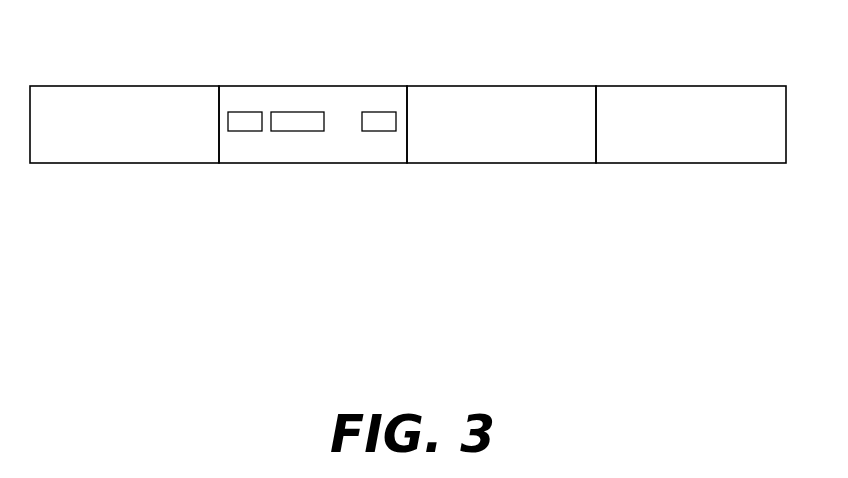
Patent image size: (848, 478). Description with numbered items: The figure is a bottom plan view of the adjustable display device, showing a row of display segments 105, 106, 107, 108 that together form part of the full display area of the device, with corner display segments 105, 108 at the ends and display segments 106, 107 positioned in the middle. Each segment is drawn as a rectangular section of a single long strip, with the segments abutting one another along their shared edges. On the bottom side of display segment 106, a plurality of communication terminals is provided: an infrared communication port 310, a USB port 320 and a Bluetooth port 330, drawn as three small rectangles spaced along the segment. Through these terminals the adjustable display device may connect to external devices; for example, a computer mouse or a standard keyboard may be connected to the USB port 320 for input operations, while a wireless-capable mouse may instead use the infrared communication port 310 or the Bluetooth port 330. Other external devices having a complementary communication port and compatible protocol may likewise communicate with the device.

The display segment 105 is at (108, 86).
The display segment 106 is at (290, 86).
The display segment 107 is at (477, 86).
The display segment 108 is at (643, 86).
The infrared communication port 310 is at (243, 131).
The USB port 320 is at (305, 131).
The Bluetooth port 330 is at (384, 131).